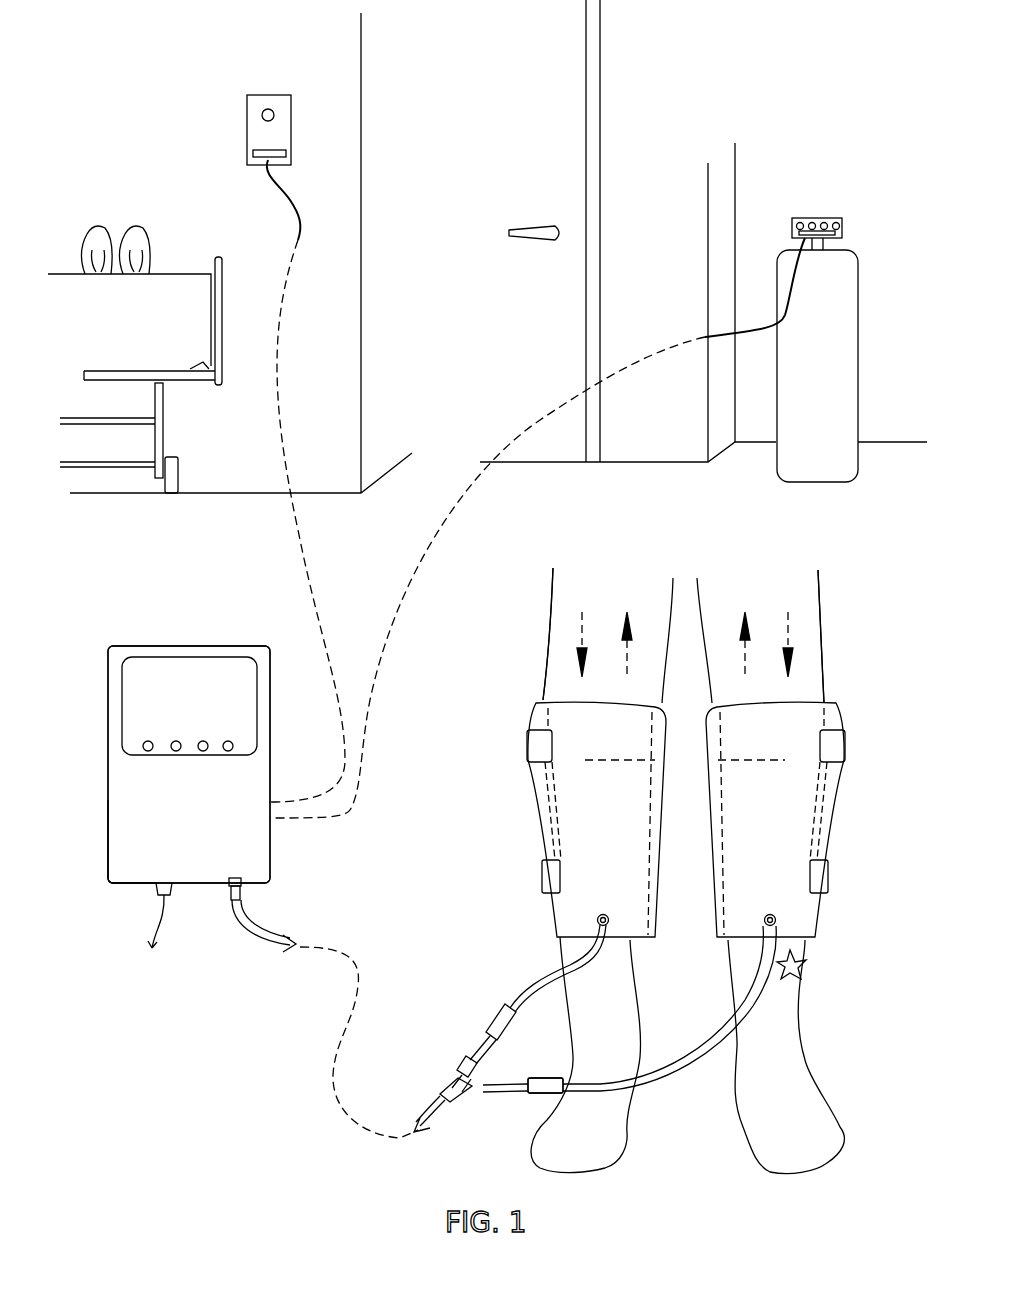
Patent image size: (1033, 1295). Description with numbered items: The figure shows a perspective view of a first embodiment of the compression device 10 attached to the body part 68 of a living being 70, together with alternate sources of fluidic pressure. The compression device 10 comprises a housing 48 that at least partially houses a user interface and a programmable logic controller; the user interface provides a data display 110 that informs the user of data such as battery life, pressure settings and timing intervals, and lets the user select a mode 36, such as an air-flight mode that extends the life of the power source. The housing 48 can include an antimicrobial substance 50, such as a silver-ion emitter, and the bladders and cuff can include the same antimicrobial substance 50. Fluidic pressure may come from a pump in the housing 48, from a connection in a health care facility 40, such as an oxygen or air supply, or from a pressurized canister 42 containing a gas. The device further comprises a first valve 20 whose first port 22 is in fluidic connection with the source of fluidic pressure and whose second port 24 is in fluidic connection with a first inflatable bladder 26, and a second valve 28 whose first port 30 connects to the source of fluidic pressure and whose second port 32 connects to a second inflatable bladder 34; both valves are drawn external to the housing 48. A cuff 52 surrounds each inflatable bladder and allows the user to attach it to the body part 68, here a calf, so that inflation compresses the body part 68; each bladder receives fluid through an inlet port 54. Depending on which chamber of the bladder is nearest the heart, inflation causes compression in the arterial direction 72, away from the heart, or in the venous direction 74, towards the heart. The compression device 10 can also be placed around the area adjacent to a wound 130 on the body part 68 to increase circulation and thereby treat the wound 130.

The compression device 10 is at (135, 595).
The first valve 20 is at (506, 1031).
The first port 22 is at (480, 1048).
The second port 24 is at (514, 1003).
The first inflatable bladder 26 is at (532, 795).
The second valve 28 is at (545, 1096).
The first port 30 is at (526, 1090).
The second port 32 is at (566, 1091).
The second inflatable bladder 34 is at (840, 778).
The mode 36 is at (145, 746).
The connection in a health care facility 40 is at (302, 80).
The pressurized canister 42 is at (843, 186).
The housing 48 is at (108, 853).
The antimicrobial substance 50 is at (108, 772).
The cuff 52 is at (572, 700).
The inlet port 54 is at (578, 916).
The body part 68 is at (553, 592).
The living being 70 is at (515, 640).
The arterial direction 72 is at (582, 637).
The venous direction 74 is at (745, 655).
The data display 110 is at (130, 688).
The wound 130 is at (802, 975).